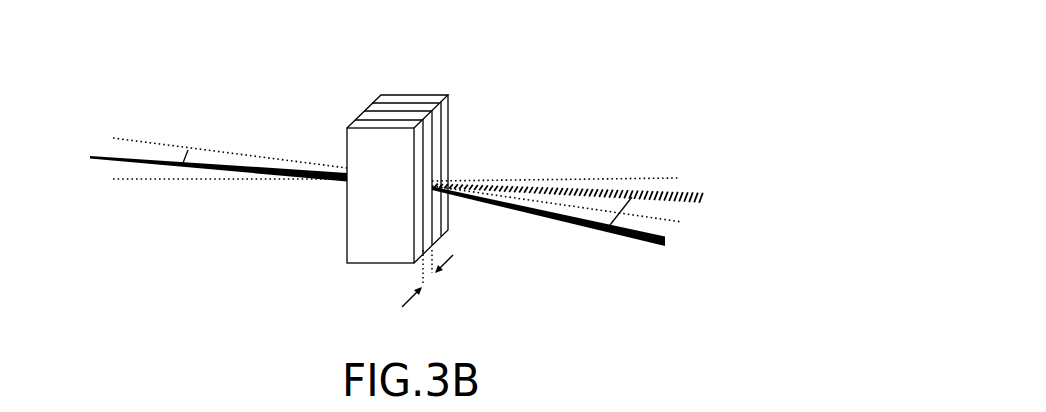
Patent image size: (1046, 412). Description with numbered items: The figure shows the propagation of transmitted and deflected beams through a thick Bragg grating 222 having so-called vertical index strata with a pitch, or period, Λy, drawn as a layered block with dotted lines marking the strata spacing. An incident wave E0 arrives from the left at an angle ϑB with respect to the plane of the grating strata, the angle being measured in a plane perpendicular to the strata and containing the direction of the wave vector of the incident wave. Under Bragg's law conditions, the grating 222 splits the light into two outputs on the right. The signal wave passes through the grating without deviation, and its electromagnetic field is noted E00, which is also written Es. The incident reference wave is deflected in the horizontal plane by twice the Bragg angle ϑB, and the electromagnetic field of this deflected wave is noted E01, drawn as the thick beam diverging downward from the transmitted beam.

The thick Bragg grating with vertical index strata 222 is at (413, 95).
The incident wave E0 is at (201, 148).
The transmitted signal wave field E00 is at (624, 185).
The deflected wave field E01 is at (568, 230).